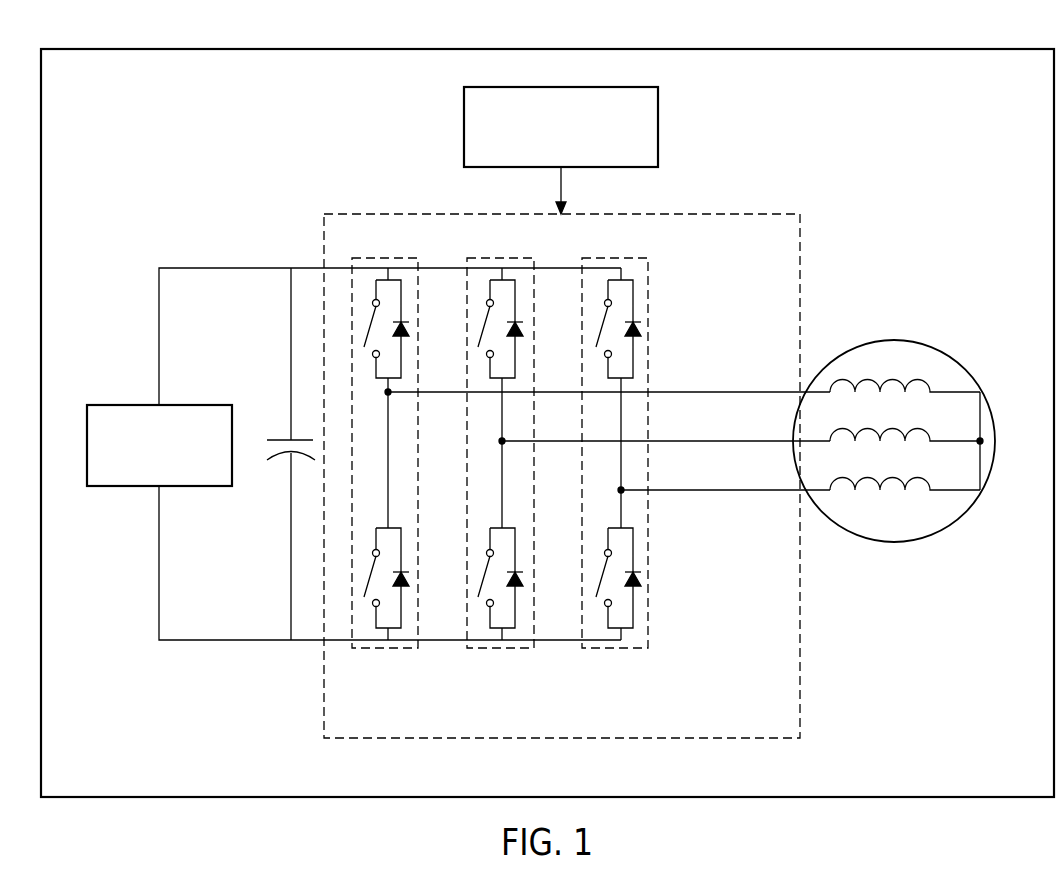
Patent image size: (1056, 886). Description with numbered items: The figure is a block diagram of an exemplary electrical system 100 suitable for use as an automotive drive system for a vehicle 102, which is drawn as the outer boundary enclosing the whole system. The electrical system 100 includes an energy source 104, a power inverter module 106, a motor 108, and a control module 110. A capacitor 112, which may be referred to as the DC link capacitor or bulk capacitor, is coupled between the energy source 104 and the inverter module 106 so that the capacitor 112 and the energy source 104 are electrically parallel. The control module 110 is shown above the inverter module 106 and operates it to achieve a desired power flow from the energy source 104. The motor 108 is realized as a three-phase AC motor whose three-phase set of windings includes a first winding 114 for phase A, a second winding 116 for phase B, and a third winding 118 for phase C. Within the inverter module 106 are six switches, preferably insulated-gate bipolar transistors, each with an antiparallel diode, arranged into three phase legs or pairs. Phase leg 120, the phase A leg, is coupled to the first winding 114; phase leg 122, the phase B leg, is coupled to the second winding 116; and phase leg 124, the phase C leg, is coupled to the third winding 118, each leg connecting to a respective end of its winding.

The electrical system 100 is at (317, 140).
The vehicle 102 is at (605, 48).
The energy source 104 is at (133, 405).
The power inverter module 106 is at (587, 739).
The motor 108 is at (940, 351).
The control module 110 is at (659, 127).
The capacitor 112 is at (265, 462).
The first winding 114 is at (892, 381).
The second winding 116 is at (892, 430).
The third winding 118 is at (892, 480).
The phase leg 120 is at (591, 491).
The phase leg 122 is at (648, 491).
The phase leg 124 is at (706, 491).